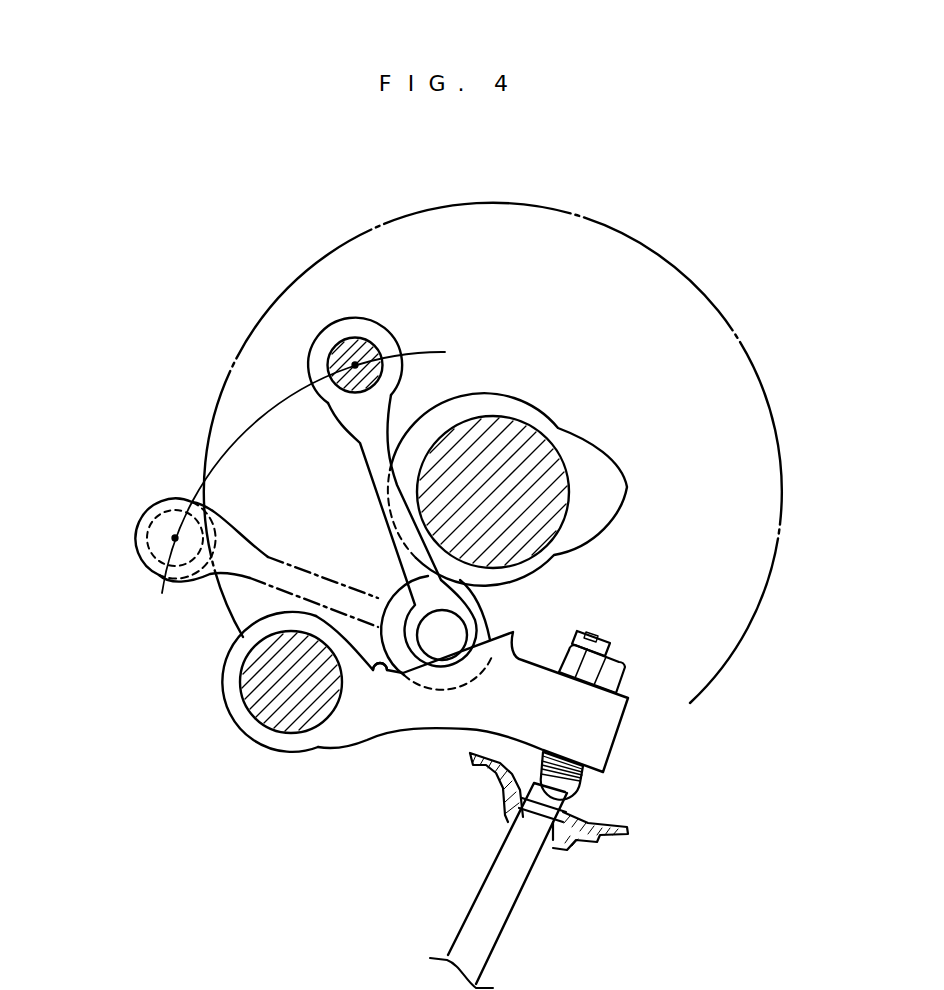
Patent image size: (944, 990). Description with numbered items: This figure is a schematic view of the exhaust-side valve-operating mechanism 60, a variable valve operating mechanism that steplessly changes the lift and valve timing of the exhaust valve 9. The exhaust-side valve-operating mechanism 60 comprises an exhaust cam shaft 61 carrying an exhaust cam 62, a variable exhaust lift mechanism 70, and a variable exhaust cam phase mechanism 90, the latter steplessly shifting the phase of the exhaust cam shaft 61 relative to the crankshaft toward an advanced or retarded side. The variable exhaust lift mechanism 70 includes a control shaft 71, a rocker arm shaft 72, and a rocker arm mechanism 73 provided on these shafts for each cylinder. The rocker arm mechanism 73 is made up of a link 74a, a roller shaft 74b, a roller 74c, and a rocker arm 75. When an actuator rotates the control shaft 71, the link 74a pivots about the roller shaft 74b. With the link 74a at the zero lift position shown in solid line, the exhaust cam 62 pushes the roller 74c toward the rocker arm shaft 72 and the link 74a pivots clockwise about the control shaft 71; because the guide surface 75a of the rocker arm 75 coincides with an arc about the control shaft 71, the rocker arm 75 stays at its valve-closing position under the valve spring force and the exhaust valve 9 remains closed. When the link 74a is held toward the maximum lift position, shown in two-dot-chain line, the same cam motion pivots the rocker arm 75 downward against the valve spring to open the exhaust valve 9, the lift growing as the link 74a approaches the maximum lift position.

The exhaust-side valve-operating mechanism 60 is at (710, 196).
The variable exhaust cam phase mechanism 90 is at (754, 364).
The exhaust cam shaft 61 is at (497, 425).
The exhaust cam 62 is at (581, 432).
The variable exhaust lift mechanism 70 is at (182, 392).
The control shaft 71 is at (365, 345).
The rocker arm shaft 72 is at (288, 720).
The rocker arm mechanism 73 is at (175, 657).
The link 74a is at (362, 318).
The roller shaft 74b is at (437, 633).
The roller 74c is at (493, 609).
The rocker arm 75 is at (243, 733).
The guide surface 75a is at (377, 664).
The exhaust valve 9 is at (510, 920).